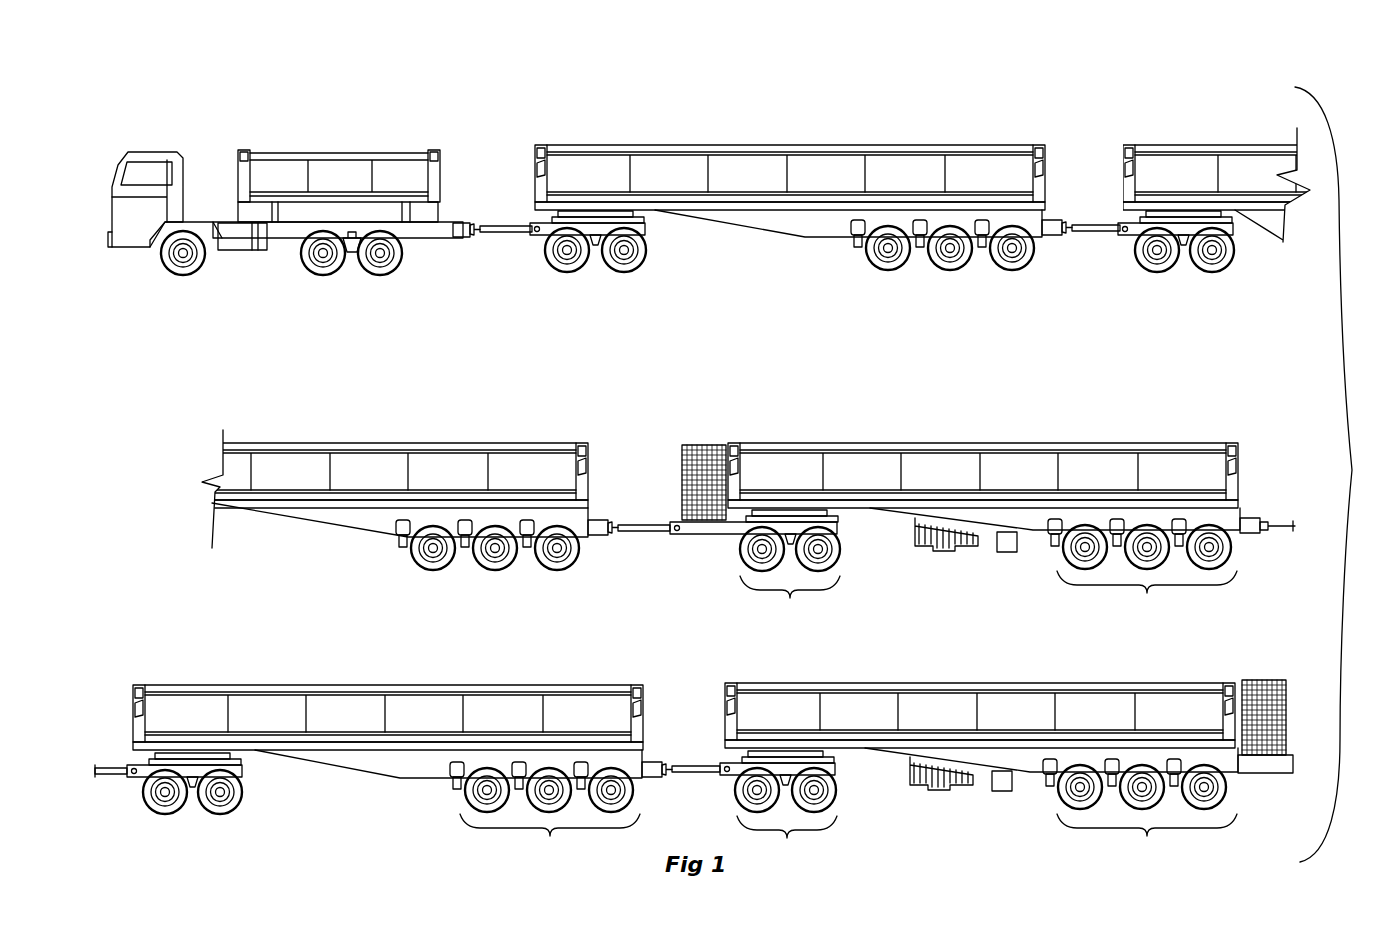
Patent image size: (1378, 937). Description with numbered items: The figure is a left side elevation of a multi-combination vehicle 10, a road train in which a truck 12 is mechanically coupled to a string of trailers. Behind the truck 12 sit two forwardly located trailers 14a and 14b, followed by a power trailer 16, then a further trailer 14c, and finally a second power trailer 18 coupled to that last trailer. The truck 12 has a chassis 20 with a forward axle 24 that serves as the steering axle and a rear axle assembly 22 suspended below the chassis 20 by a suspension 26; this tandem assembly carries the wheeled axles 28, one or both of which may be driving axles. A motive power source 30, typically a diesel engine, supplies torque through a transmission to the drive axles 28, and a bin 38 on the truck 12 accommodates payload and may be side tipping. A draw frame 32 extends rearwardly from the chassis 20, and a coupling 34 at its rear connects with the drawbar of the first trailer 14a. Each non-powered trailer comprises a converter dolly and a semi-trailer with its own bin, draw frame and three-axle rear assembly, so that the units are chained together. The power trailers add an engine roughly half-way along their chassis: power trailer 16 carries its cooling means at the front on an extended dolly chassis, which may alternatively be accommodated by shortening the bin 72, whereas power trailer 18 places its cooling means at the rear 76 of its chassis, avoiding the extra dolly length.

The multi-combination vehicle 10 is at (1318, 86).
The truck 12 is at (298, 213).
The trailer 14a is at (775, 209).
The trailer 14b is at (334, 502).
The trailer 14c is at (367, 740).
The power trailer 16 is at (973, 502).
The second power trailer 18 is at (999, 738).
The chassis 20 is at (432, 239).
The rear axle assembly 22 is at (346, 218).
The forward axle 24 is at (178, 275).
The suspension 26 is at (356, 234).
The wheeled axles 28 is at (318, 275).
The motive power source 30 is at (185, 210).
The draw frame 32 is at (466, 224).
The coupling 34 is at (481, 235).
The bin 38 is at (276, 180).
The bin 72 is at (1105, 460).
The rear 76 is at (1265, 775).